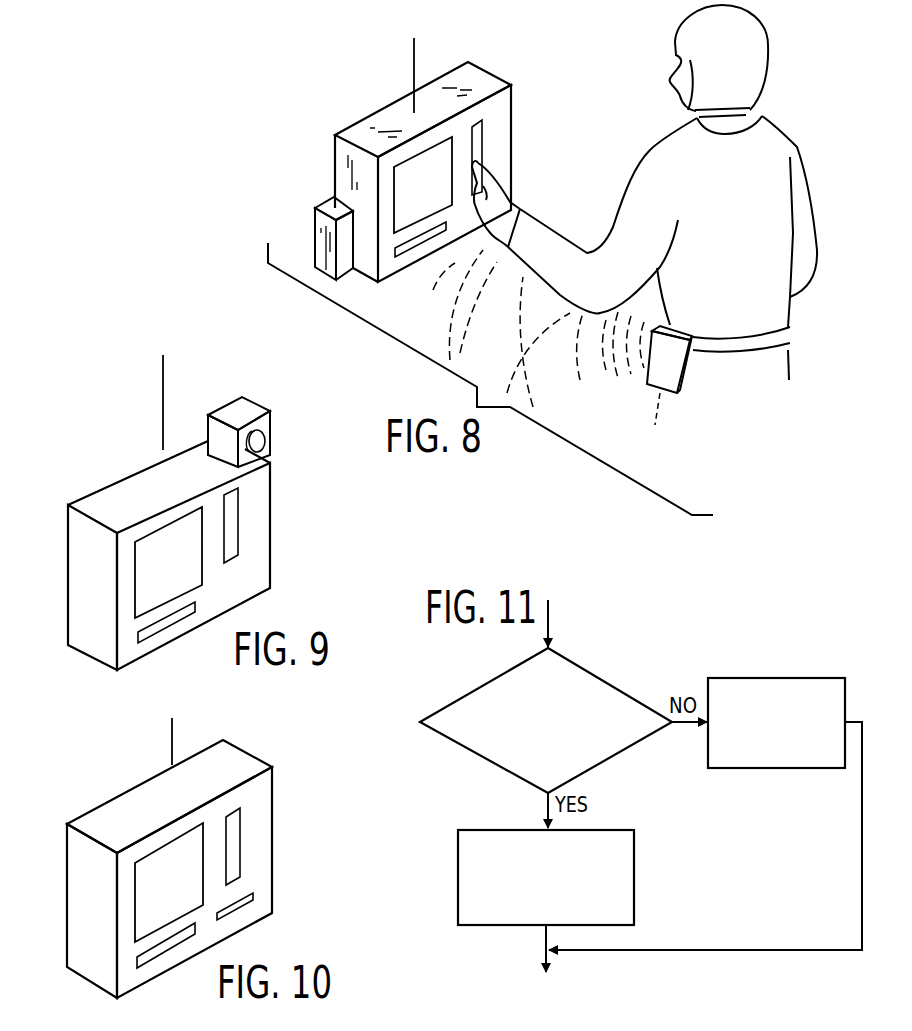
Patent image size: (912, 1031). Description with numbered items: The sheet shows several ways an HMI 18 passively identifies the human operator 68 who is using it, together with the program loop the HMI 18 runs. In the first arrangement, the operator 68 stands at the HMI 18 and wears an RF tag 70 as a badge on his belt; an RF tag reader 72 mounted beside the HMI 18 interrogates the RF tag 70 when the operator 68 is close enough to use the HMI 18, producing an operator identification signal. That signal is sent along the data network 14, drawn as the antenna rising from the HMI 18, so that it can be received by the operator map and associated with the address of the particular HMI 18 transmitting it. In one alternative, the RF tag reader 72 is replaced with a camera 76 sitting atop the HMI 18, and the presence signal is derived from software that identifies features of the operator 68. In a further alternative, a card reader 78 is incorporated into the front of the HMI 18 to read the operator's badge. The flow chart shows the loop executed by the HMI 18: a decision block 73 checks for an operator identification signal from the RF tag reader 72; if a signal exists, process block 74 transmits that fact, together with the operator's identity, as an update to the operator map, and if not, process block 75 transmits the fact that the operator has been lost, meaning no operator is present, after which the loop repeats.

In FIG. 8, the data network 14 is at (414, 80).
In FIG. 9, the data network 14 is at (163, 392).
In FIG. 10, the data network 14 is at (168, 752).
In FIG. 8, the HMI 18 is at (483, 73).
In FIG. 9, the HMI 18 is at (118, 482).
In FIG. 10, the HMI 18 is at (225, 760).
In FIG. 8, the operator 68 is at (777, 160).
In FIG. 8, the RF tag 70 is at (673, 372).
In FIG. 8, the RF tag reader 72 is at (318, 240).
In FIG. 11, the decision block 73 is at (577, 662).
In FIG. 11, the process block 74 is at (603, 830).
In FIG. 11, the process block 75 is at (782, 677).
In FIG. 9, the camera 76 is at (250, 410).
In FIG. 10, the card reader 78 is at (238, 907).